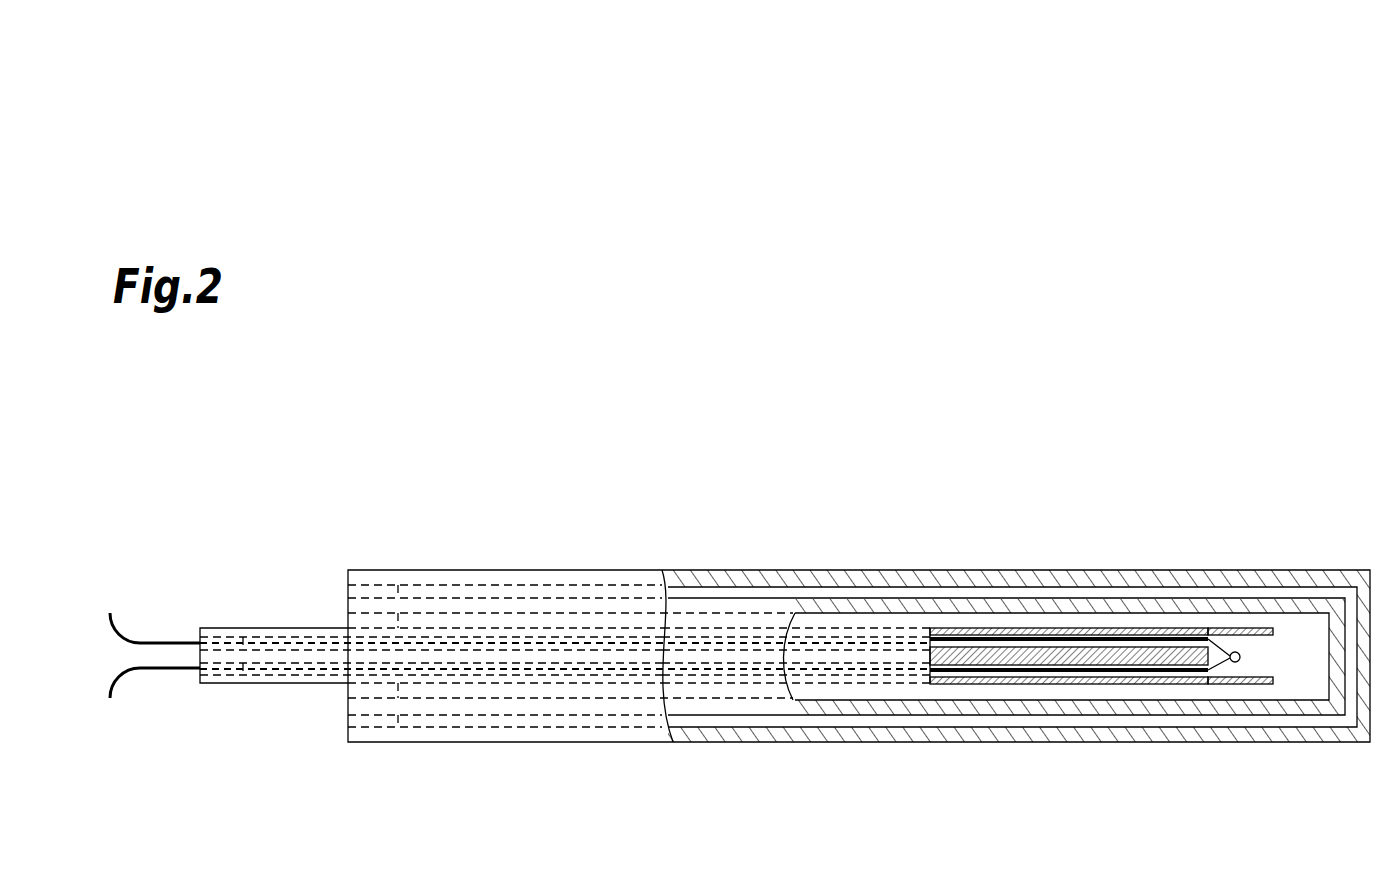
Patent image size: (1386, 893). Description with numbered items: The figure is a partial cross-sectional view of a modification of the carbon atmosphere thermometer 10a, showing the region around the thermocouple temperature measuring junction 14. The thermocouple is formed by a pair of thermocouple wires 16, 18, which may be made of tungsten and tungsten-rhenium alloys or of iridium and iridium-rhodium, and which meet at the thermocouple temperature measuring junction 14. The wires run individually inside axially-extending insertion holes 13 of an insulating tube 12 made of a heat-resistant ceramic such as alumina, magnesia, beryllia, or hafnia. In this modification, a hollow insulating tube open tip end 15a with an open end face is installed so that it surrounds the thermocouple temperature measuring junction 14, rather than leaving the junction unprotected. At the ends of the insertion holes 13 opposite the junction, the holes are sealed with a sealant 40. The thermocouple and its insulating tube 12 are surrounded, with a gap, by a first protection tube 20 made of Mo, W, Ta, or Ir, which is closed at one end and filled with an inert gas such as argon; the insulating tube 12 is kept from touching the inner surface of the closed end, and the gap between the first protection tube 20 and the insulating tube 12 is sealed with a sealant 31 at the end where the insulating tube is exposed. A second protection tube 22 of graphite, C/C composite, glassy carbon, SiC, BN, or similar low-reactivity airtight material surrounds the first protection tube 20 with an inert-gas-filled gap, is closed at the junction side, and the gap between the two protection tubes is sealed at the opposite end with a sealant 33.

The carbon atmosphere thermometer 10a is at (1005, 369).
The insulating tube 12 is at (848, 627).
The insertion holes 13 is at (973, 631).
The thermocouple temperature measuring junction 14 is at (1241, 656).
The hollow insulating tube open tip end 15a is at (1237, 629).
The thermocouple wire 16 is at (120, 634).
The thermocouple wire 18 is at (135, 670).
The first protection tube 20 is at (1040, 600).
The second protection tube 22 is at (1142, 571).
The sealant 31 is at (347, 695).
The sealant 33 is at (350, 722).
The sealant 40 is at (221, 636).